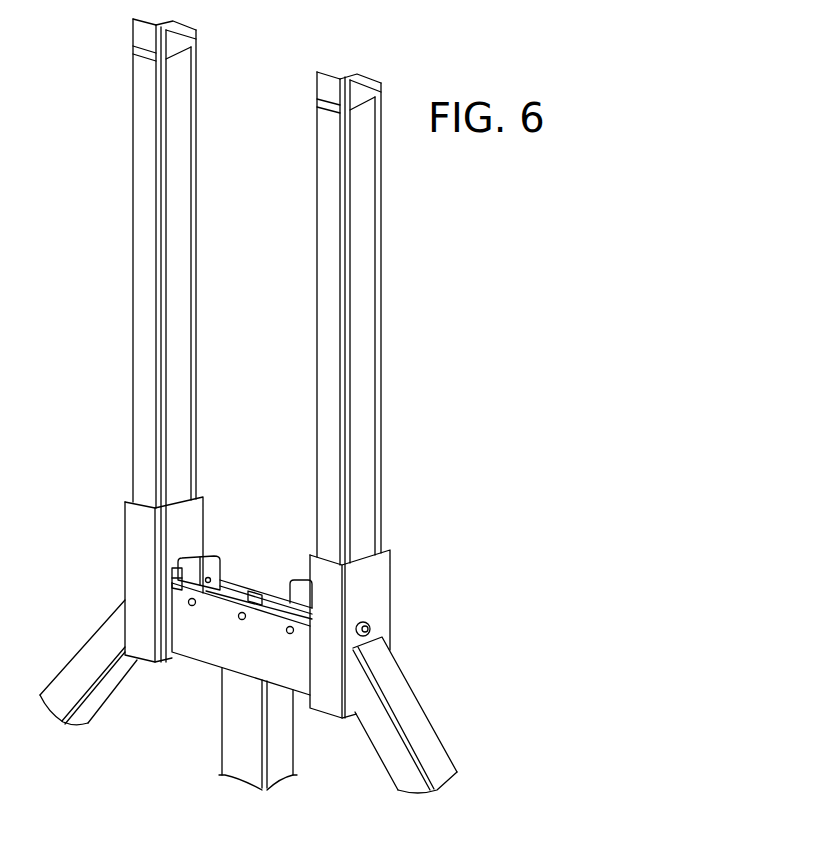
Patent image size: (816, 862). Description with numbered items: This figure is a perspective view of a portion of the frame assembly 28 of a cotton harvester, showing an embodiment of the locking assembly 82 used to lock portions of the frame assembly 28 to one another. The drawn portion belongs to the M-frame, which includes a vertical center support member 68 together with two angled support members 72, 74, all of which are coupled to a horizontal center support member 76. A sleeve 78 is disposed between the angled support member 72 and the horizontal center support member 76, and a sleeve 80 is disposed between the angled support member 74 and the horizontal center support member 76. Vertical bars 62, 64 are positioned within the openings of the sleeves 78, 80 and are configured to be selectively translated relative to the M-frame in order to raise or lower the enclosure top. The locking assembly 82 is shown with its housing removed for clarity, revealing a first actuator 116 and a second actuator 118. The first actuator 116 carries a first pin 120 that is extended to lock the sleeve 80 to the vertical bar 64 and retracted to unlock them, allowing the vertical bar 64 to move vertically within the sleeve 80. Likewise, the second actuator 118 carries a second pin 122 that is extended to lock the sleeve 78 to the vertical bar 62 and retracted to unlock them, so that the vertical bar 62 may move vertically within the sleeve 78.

The frame assembly 28 is at (414, 59).
The vertical bar 62 is at (141, 188).
The vertical bar 64 is at (372, 294).
The vertical center support member 68 is at (238, 741).
The angled support member 72 is at (77, 666).
The angled support member 74 is at (414, 720).
The horizontal center support member 76 is at (203, 640).
The sleeve 78 is at (131, 531).
The sleeve 80 is at (381, 573).
The locking assembly 82 is at (257, 509).
The first actuator 116 is at (197, 578).
The second actuator 118 is at (299, 580).
The first pin 120 is at (294, 604).
The second pin 122 is at (238, 574).